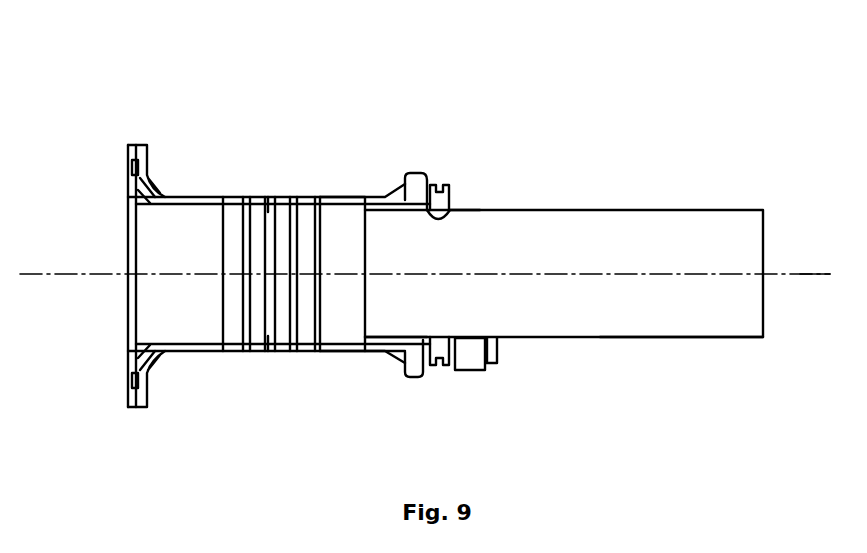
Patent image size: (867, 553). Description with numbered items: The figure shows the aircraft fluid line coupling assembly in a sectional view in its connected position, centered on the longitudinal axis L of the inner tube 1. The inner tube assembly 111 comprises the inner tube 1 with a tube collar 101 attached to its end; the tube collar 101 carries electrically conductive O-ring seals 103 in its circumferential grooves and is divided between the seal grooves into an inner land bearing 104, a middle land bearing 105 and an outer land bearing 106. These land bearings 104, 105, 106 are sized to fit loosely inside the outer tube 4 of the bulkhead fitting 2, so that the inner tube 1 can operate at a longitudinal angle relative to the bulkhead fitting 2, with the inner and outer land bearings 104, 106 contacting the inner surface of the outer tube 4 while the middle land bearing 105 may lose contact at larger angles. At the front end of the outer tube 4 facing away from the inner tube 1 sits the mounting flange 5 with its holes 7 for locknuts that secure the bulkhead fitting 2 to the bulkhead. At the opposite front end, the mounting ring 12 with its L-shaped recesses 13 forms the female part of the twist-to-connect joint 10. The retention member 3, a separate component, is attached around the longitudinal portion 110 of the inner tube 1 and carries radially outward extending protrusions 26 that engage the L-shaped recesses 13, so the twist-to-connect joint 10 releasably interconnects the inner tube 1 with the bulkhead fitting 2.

The inner tube 1 is at (725, 210).
The bulkhead fitting 2 is at (126, 364).
The retention member 3 is at (447, 368).
The outer tube 4 is at (165, 195).
The mounting flange 5 is at (135, 145).
The holes 7 is at (130, 388).
The twist-to-connect joint 10 is at (431, 188).
The mounting ring 12 is at (416, 173).
The L-shaped recesses 13 is at (420, 366).
The protrusions 26 is at (403, 354).
The tube collar 101 is at (326, 196).
The O-ring seals 103 is at (245, 352).
The inner land bearing 104 is at (237, 200).
The middle land bearing 105 is at (292, 200).
The outer land bearing 106 is at (352, 197).
The longitudinal portion 110 is at (462, 208).
The inner tube assembly 111 is at (663, 338).
The longitudinal axis L is at (803, 272).